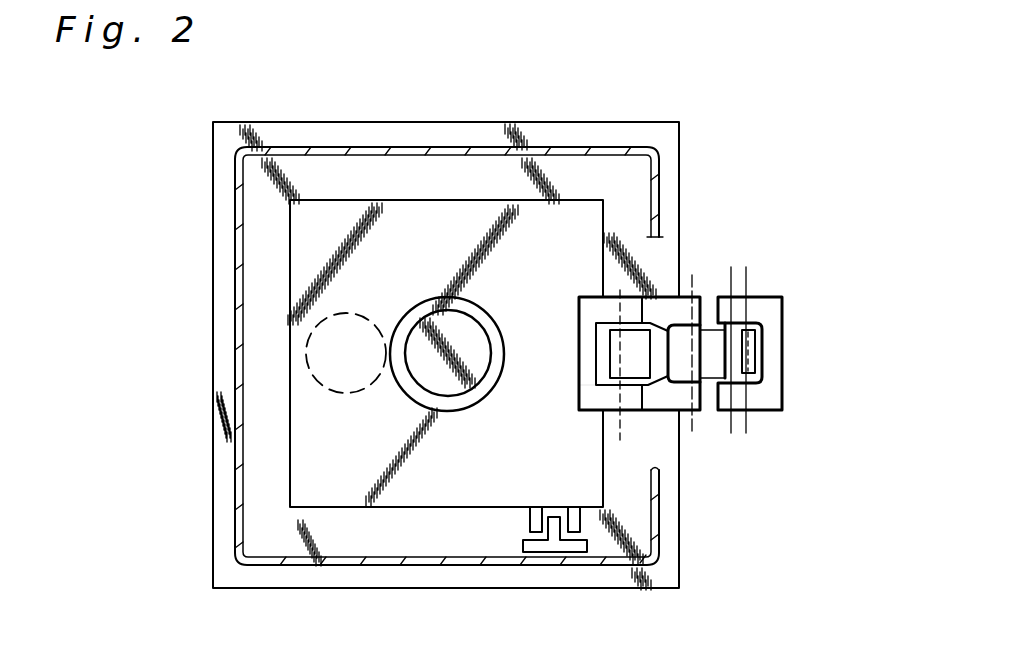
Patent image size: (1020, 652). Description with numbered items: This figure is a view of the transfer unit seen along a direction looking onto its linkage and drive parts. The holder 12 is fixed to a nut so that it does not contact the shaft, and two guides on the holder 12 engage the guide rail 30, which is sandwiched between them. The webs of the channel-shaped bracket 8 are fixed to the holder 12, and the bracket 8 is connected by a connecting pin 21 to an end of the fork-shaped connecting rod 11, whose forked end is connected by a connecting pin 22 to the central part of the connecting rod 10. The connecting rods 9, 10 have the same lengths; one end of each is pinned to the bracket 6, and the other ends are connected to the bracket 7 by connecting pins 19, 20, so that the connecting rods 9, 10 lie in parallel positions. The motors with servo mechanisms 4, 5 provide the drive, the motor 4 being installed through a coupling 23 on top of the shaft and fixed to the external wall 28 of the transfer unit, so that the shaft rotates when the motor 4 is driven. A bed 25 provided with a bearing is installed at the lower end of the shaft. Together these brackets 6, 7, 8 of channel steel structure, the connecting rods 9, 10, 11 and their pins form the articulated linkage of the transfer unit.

The motor with servo mechanism 4 is at (487, 313).
The motor with servo mechanism 5 is at (343, 393).
The bracket having channel steel structure 6 is at (657, 410).
The bracket having channel steel structure 7 is at (782, 322).
The bracket having channel steel structure 8 is at (590, 397).
The connecting rod 9 is at (752, 355).
The connecting rod 10 is at (708, 366).
The fork-shaped connecting rod 11 is at (650, 323).
The holder 12 is at (300, 462).
The connecting pin 19 is at (731, 268).
The connecting pin 20 is at (748, 287).
The connecting pin 21 is at (620, 428).
The connecting pin 22 is at (692, 275).
The coupling 23 is at (457, 297).
The bed 25 is at (222, 260).
The external wall 28 is at (236, 347).
The guide rail 30 is at (523, 543).